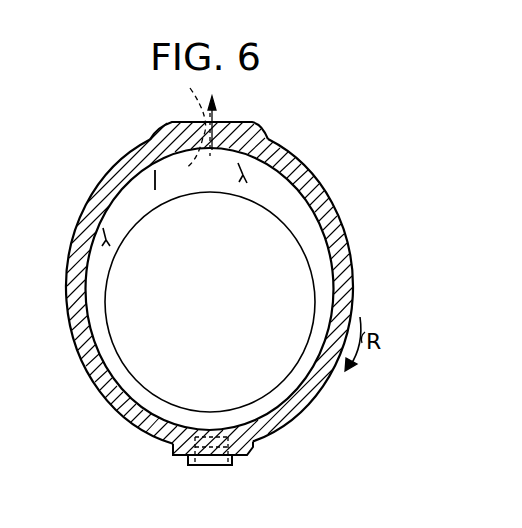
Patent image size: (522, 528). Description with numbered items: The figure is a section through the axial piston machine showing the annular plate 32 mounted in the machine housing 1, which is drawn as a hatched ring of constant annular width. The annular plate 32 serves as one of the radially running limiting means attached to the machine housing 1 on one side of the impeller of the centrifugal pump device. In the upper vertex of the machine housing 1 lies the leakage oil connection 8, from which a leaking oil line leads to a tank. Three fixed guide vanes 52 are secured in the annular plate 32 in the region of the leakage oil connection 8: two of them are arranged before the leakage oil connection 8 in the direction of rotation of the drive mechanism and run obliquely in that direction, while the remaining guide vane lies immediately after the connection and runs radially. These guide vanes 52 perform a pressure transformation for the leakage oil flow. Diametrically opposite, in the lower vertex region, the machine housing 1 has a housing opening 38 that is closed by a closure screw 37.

The machine housing 1 is at (219, 288).
The leakage oil connection 8 is at (197, 124).
The annular plate 32 is at (303, 216).
The closure screw 37 is at (207, 465).
The housing opening 38 is at (240, 458).
The guide vanes 52 is at (100, 237).